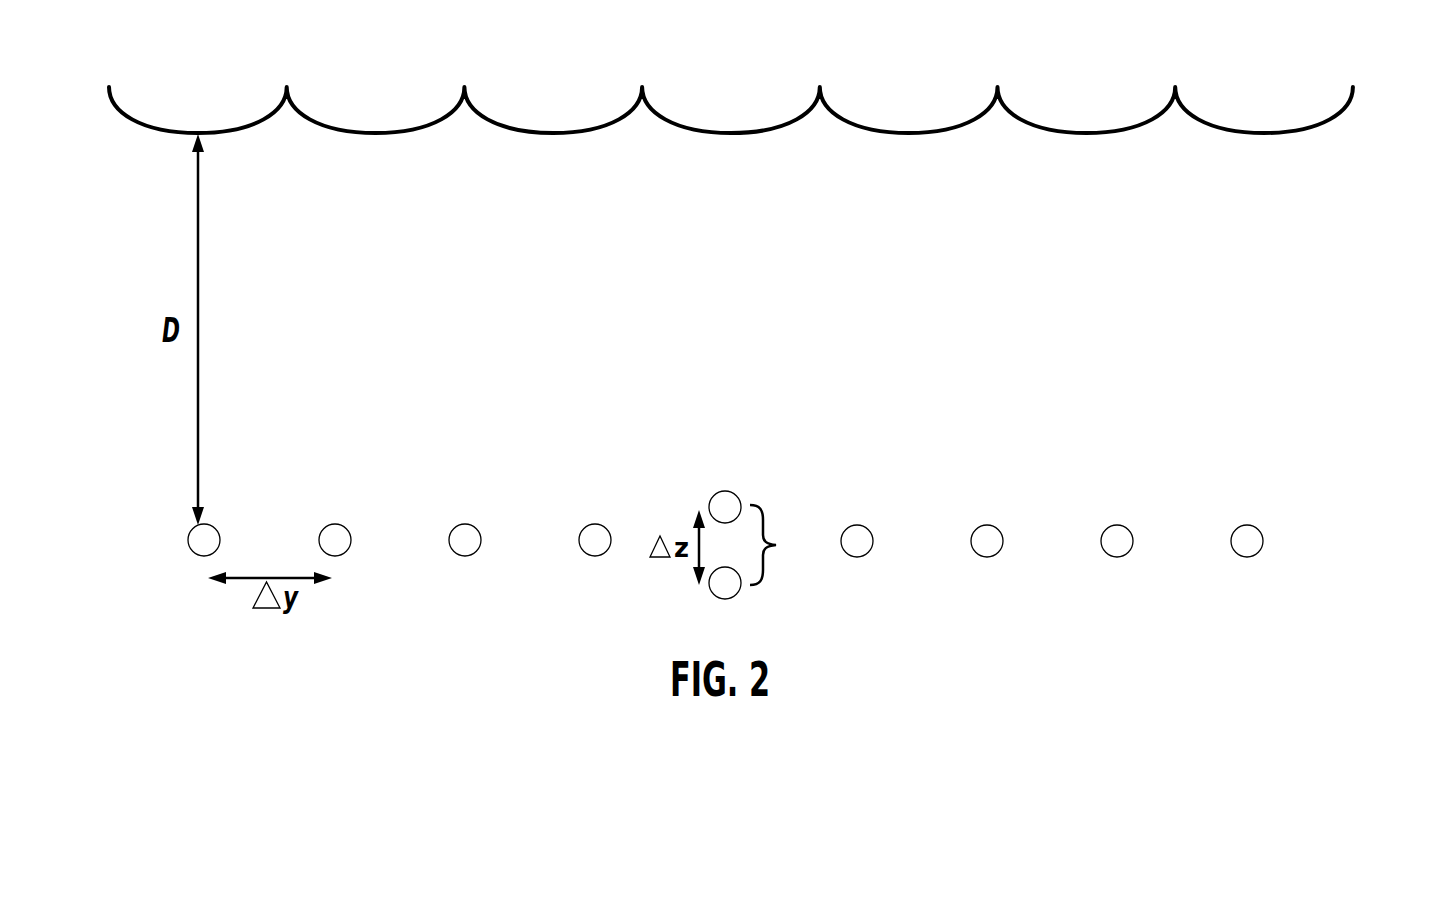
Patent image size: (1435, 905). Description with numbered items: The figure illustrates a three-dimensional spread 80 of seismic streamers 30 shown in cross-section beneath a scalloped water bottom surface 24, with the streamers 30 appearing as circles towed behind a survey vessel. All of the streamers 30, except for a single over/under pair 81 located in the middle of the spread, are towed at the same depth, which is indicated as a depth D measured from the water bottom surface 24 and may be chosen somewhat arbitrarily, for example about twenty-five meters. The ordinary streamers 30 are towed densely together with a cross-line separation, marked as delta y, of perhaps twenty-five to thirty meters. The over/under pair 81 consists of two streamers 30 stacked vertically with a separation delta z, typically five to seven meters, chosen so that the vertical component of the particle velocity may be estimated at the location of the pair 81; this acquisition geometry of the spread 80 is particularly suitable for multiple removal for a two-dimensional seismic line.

The water bottom surface 24 is at (884, 130).
The seismic streamers 30 is at (216, 529).
The 3-D spread 80 is at (1348, 298).
The over/under pair 81 is at (777, 546).